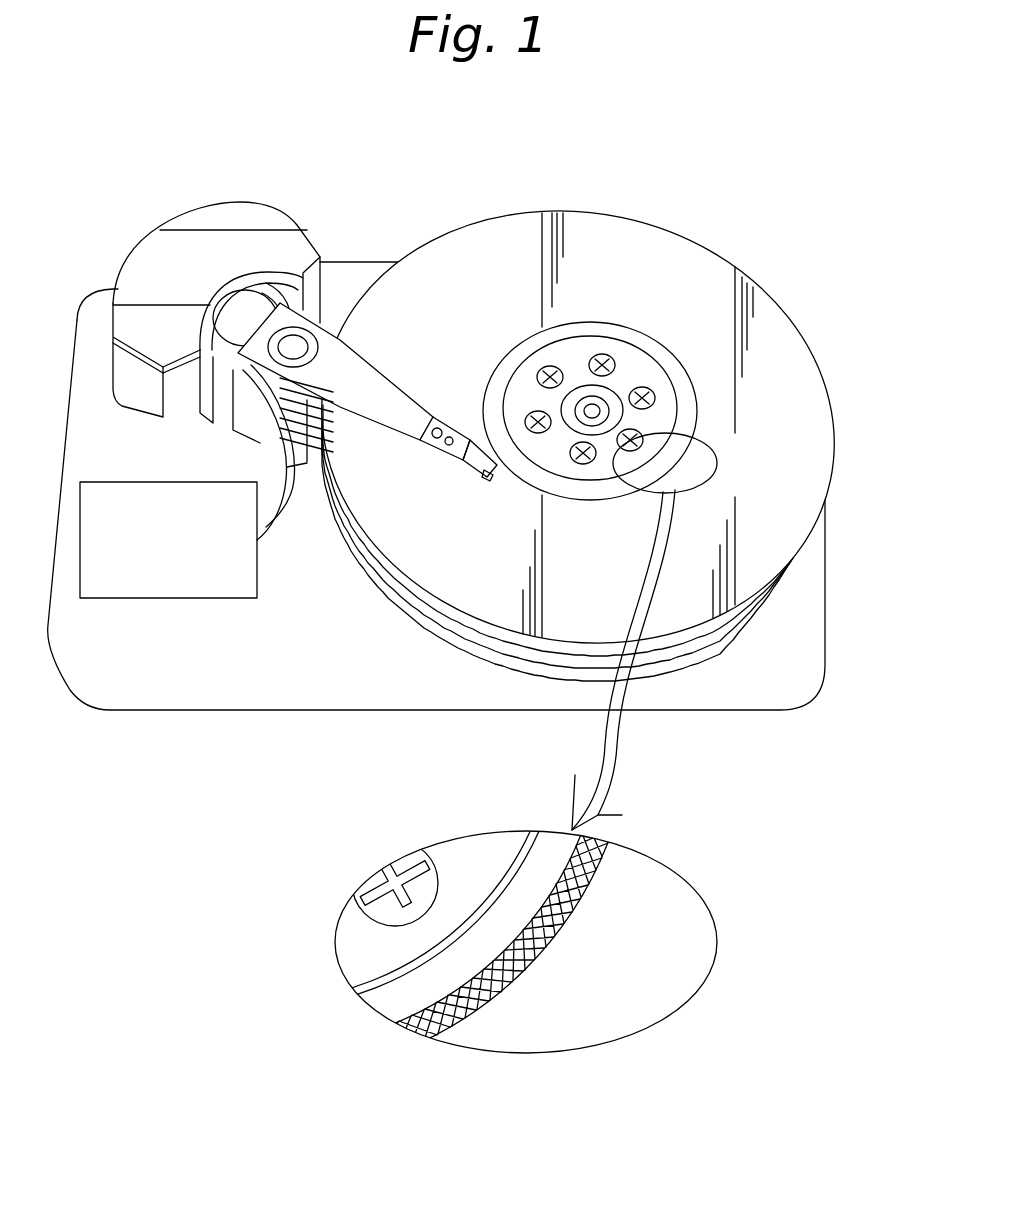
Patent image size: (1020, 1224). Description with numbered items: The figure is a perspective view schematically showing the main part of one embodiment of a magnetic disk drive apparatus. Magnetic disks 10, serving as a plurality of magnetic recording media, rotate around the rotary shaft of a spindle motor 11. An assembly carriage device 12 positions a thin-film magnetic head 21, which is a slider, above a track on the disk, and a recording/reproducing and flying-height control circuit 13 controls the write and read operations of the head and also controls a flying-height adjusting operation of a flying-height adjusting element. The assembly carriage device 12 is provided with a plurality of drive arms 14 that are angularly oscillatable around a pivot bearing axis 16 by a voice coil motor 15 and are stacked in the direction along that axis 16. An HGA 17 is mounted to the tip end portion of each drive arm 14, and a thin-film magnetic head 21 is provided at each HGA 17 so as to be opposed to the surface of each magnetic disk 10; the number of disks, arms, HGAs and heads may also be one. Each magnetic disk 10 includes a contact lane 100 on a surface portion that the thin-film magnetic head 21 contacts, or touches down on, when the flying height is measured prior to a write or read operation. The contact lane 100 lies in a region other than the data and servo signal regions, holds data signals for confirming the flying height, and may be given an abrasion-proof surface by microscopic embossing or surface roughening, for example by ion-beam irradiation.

The magnetic disk 10 is at (747, 254).
The spindle motor 11 is at (598, 413).
The assembly carriage device 12 is at (242, 222).
The recording/reproducing and flying-height control circuit 13 is at (155, 600).
The drive arm 14 is at (363, 387).
The voice coil motor 15 is at (212, 420).
The pivot bearing axis 16 is at (297, 350).
The HGA 17 is at (463, 467).
The thin-film magnetic head 21 is at (488, 480).
The contact lane 100 is at (697, 417).